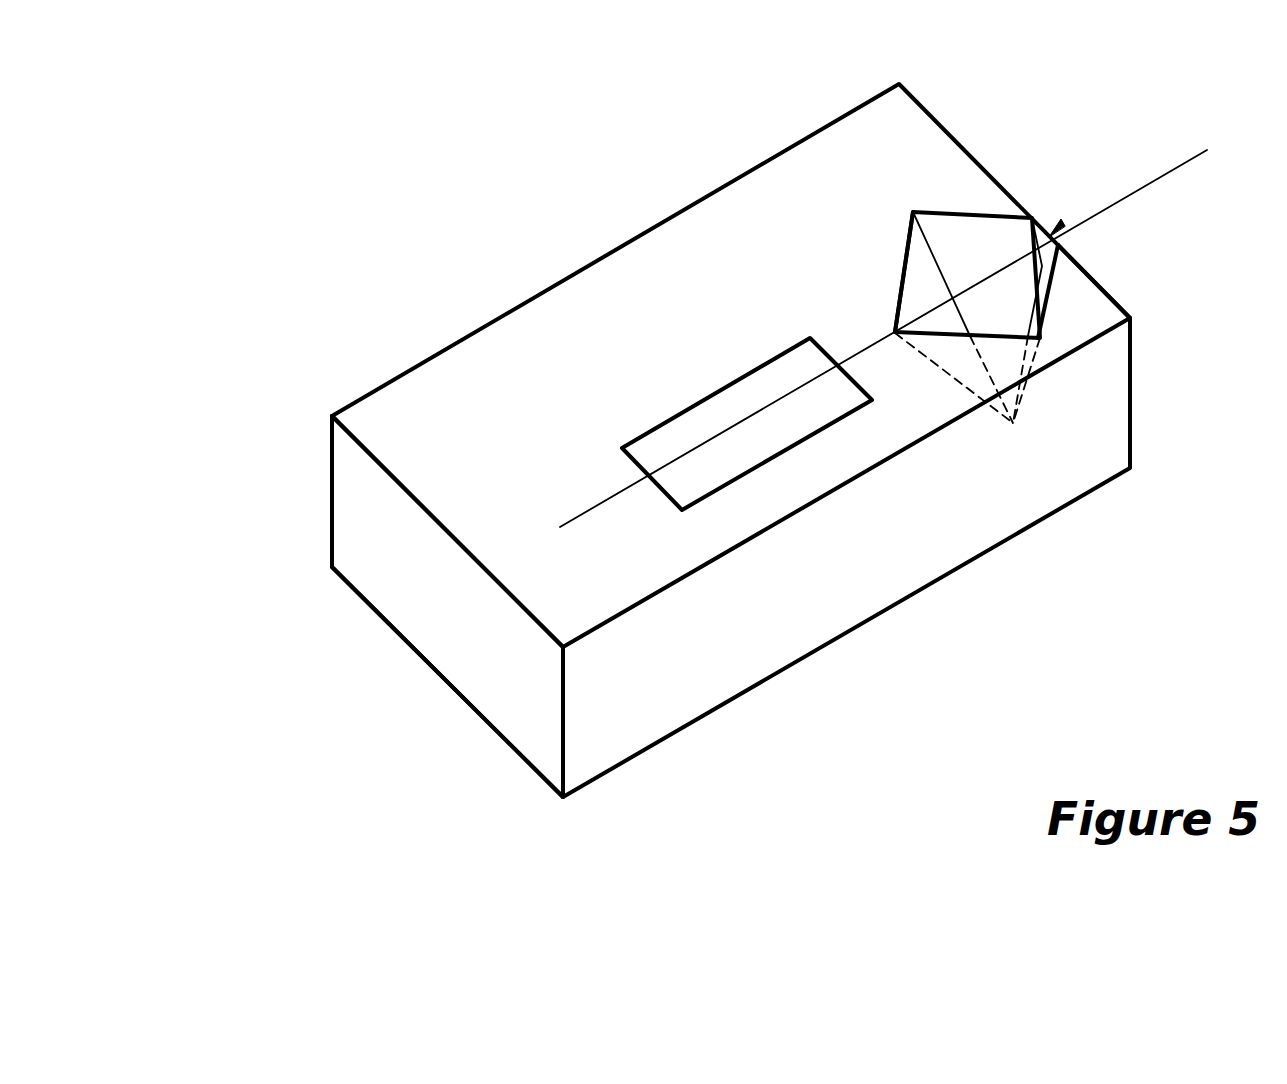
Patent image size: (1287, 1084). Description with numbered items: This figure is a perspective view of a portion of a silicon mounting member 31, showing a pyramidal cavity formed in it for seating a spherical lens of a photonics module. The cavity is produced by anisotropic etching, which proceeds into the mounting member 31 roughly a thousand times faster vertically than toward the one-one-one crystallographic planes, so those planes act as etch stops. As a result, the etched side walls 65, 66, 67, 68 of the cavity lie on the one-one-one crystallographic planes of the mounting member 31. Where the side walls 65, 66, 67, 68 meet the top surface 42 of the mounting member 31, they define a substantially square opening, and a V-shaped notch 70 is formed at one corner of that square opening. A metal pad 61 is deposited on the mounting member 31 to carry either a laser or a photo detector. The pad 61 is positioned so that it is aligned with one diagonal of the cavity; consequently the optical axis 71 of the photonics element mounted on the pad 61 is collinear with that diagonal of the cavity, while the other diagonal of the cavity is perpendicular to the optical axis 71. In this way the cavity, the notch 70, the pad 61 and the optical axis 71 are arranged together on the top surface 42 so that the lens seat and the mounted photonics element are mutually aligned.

The mounting member 31 is at (373, 390).
The top surface 42 is at (542, 573).
The metal pad 61 is at (682, 412).
The side wall 65 is at (923, 283).
The side wall 66 is at (963, 240).
The side wall 67 is at (1047, 303).
The side wall 68 is at (955, 362).
The V-shaped notch 70 is at (1056, 228).
The optical axis 71 is at (1185, 164).